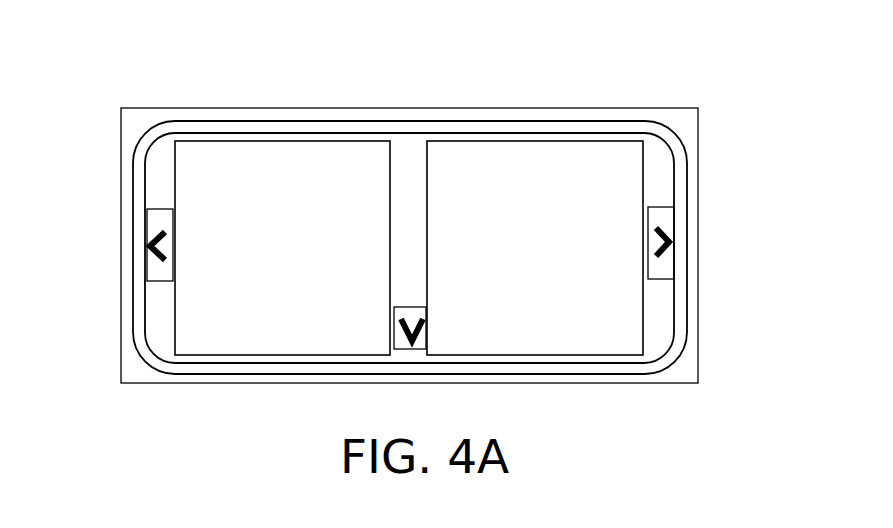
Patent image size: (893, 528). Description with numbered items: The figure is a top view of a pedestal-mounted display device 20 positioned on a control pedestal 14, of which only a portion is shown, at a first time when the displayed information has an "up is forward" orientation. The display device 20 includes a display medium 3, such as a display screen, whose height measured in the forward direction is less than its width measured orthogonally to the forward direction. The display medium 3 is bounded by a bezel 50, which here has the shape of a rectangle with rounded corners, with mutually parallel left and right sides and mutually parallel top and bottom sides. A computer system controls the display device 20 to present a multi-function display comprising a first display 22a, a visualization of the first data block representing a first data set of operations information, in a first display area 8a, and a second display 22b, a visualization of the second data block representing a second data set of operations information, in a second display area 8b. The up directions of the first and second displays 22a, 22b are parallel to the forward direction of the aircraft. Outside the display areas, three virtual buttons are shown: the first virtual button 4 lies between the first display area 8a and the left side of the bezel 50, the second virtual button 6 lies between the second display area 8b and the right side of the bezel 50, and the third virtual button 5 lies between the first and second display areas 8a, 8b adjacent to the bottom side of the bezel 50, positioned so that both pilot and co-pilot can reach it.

The display medium 3 is at (409, 236).
The first virtual button 4 is at (163, 282).
The third virtual button 5 is at (403, 347).
The second virtual button 6 is at (660, 205).
The first display area 8a is at (345, 147).
The second display area 8b is at (608, 147).
The control pedestal 14 is at (663, 385).
The display device 20 is at (292, 123).
The first display 22a is at (104, 262).
The second display 22b is at (714, 220).
The bezel 50 is at (200, 375).